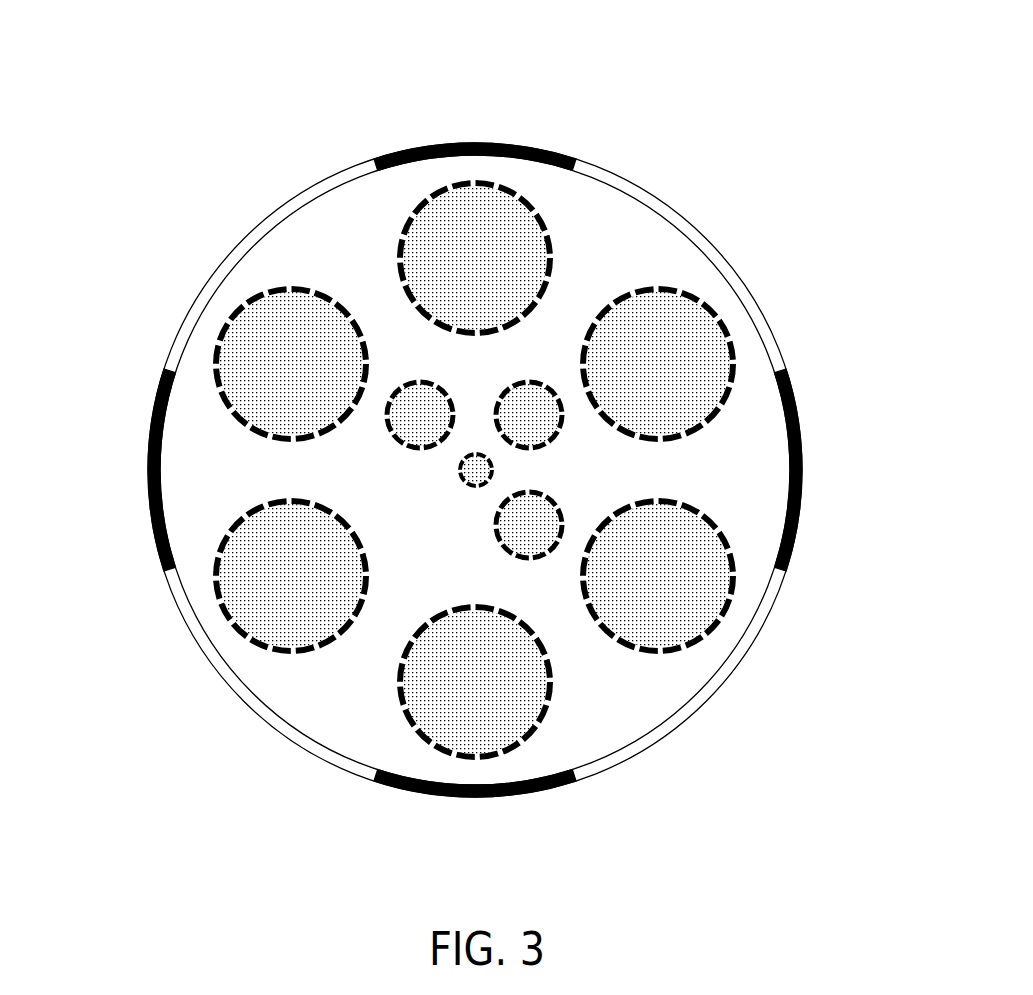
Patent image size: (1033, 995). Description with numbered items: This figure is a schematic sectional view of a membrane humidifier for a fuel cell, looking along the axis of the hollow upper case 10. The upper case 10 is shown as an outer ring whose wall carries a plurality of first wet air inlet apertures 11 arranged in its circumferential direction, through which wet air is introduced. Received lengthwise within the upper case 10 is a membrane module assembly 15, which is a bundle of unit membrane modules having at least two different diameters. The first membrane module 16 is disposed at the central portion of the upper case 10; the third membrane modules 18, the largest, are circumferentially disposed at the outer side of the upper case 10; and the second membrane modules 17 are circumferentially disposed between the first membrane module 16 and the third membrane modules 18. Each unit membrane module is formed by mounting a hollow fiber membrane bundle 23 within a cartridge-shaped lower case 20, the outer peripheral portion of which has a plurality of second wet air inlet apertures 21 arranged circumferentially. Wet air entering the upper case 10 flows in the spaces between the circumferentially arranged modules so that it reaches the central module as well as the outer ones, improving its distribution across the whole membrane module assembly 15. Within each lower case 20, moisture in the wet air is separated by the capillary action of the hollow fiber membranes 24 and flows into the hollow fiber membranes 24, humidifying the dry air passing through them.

The upper case 10 is at (500, 138).
The first wet air inlet apertures 11 is at (621, 178).
The membrane module assembly 15 is at (252, 468).
The first membrane module 16 is at (506, 463).
The second membrane modules 17 is at (584, 512).
The third membrane modules 18 is at (234, 652).
The lower case 20 is at (458, 467).
The second wet air inlet apertures 21 is at (491, 487).
The hollow fiber membrane bundle 23 is at (481, 452).
The hollow fiber membranes 24 is at (474, 452).